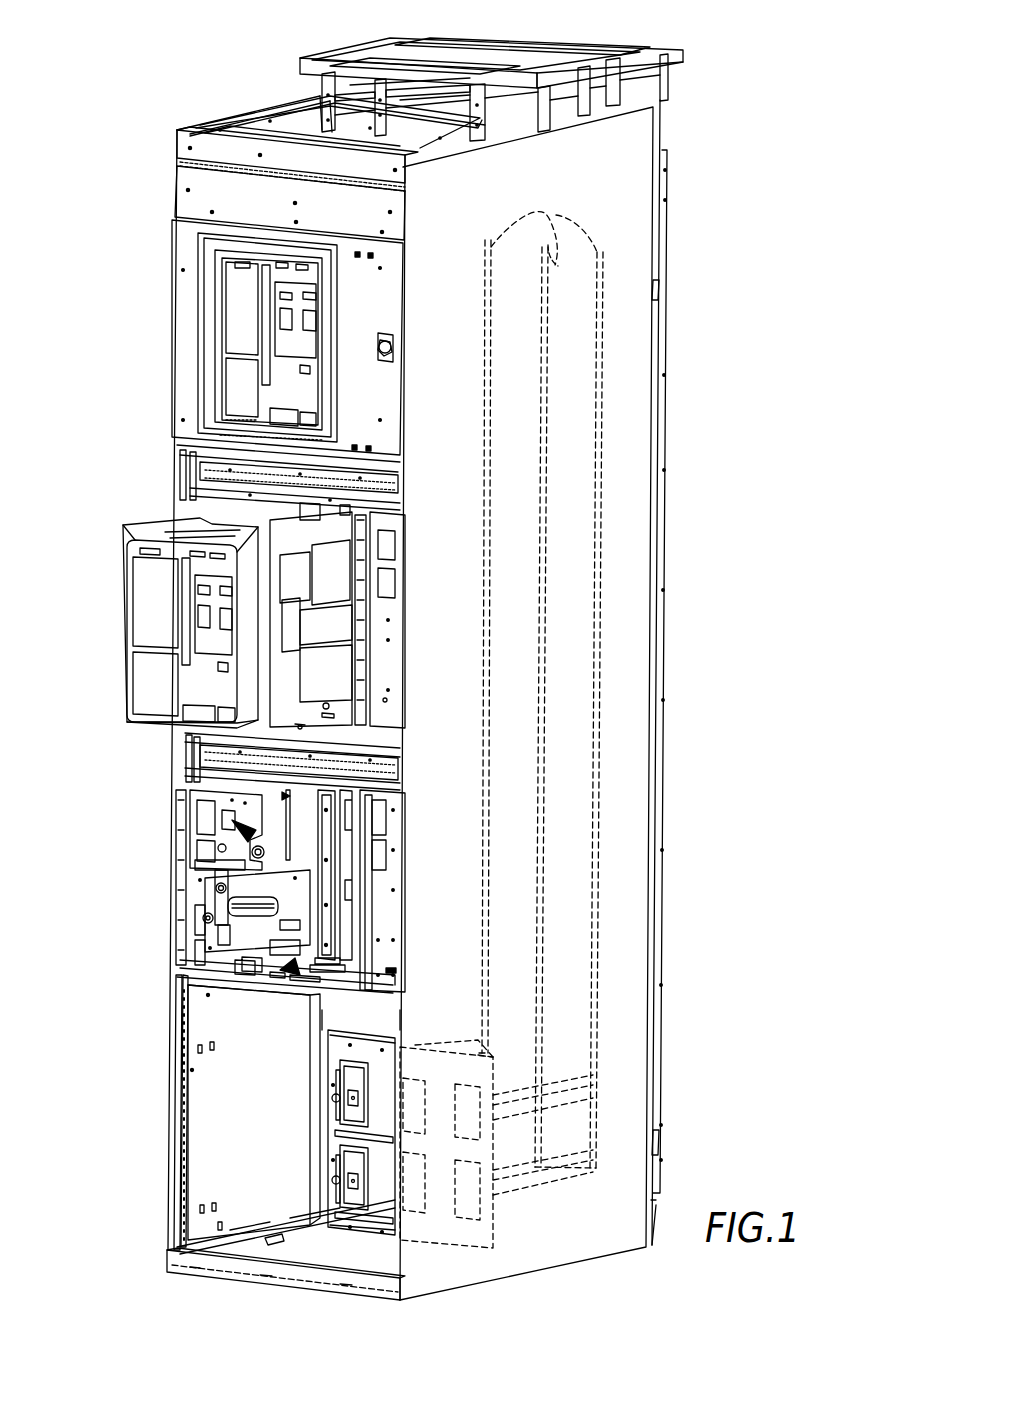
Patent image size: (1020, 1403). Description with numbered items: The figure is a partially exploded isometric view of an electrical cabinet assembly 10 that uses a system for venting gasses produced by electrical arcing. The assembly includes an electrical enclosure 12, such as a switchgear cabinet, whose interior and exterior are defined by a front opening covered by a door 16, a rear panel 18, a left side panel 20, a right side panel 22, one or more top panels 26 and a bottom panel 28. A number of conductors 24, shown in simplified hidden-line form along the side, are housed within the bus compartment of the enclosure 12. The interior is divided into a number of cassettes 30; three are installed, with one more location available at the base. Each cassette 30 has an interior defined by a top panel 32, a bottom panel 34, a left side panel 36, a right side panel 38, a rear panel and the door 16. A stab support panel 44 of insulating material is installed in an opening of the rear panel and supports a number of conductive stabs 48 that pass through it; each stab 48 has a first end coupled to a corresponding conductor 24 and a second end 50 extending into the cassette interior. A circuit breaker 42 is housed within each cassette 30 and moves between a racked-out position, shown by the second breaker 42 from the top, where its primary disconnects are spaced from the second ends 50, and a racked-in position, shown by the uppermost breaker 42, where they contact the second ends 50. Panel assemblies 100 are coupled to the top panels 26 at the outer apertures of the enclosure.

The electrical cabinet assembly 10 is at (151, 99).
The electrical enclosure 12 is at (178, 150).
The door 16 is at (178, 313).
The rear panel 18 is at (660, 1147).
The left side panel 20 is at (172, 1020).
The right side panel 22 is at (558, 1233).
The conductors 24 is at (556, 245).
The top panel 26 is at (284, 138).
The bottom panel 28 is at (293, 1240).
The cassette 30 is at (388, 650).
The top panel 32 is at (318, 844).
The bottom panel 34 is at (312, 917).
The left side panel 36 is at (205, 851).
The right side panel 38 is at (212, 890).
The circuit breaker 42 is at (232, 387).
The stab support panel 44 is at (333, 1125).
The stabs 48 is at (352, 1072).
The second end 50 is at (338, 1095).
The panel assemblies 100 is at (420, 62).